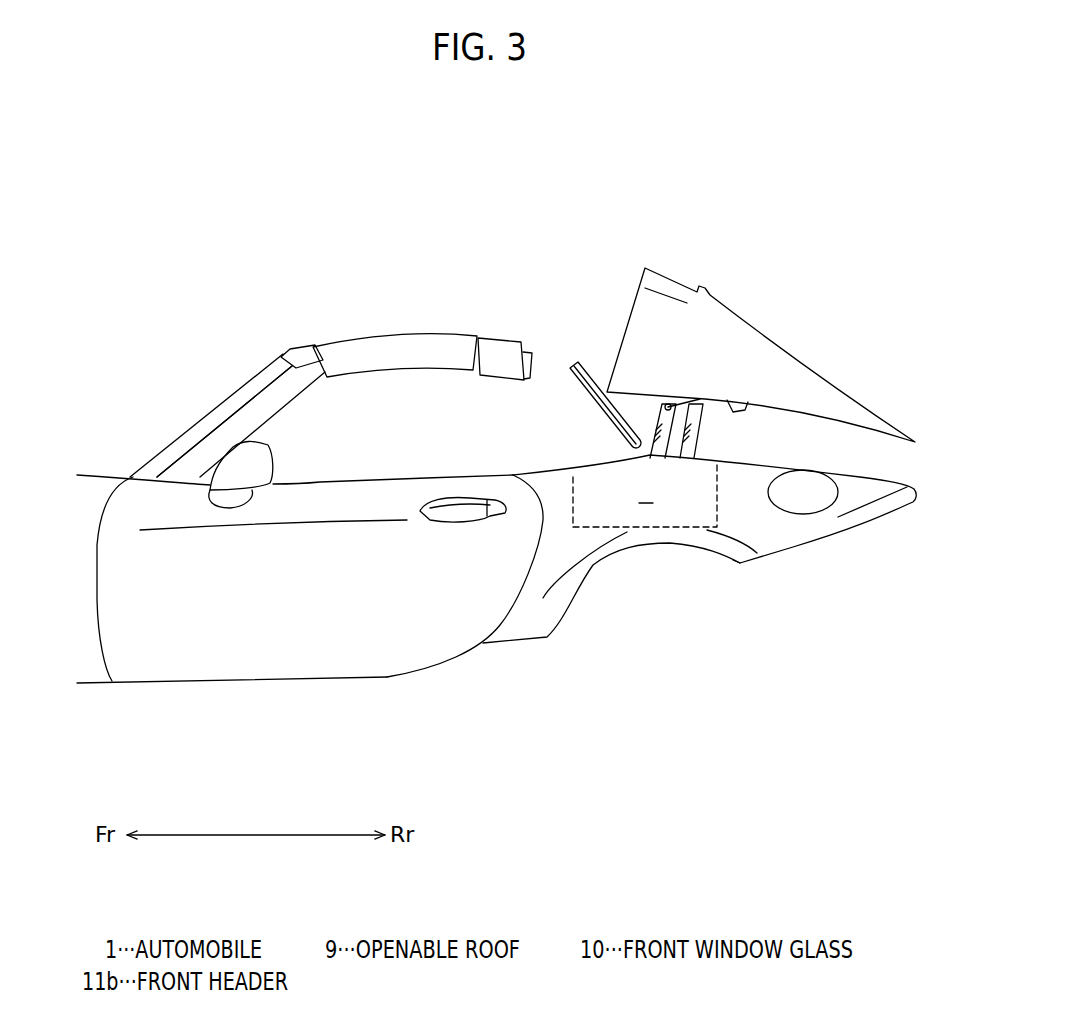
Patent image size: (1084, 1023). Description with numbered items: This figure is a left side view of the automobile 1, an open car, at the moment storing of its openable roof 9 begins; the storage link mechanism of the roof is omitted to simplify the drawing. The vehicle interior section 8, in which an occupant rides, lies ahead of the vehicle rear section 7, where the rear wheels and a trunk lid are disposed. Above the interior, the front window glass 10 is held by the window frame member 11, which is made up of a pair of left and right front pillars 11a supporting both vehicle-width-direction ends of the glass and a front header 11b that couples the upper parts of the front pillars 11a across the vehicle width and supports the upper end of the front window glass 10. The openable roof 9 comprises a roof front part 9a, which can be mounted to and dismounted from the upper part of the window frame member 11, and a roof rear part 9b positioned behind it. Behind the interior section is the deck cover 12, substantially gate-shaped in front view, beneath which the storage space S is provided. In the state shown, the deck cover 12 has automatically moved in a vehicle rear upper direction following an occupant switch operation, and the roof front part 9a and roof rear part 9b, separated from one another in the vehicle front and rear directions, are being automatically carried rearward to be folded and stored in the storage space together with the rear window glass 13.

The automobile 1 is at (178, 240).
The vehicle rear section 7 is at (890, 535).
The vehicle interior section 8 is at (308, 713).
The openable roof 9 is at (510, 252).
The roof front part 9a is at (398, 345).
The roof rear part 9b is at (505, 347).
The front window glass 10 is at (197, 427).
The window frame member 11 is at (243, 375).
The front pillar 11a is at (283, 398).
The front header 11b is at (307, 348).
The deck cover 12 is at (703, 318).
The rear window glass 13 is at (582, 373).